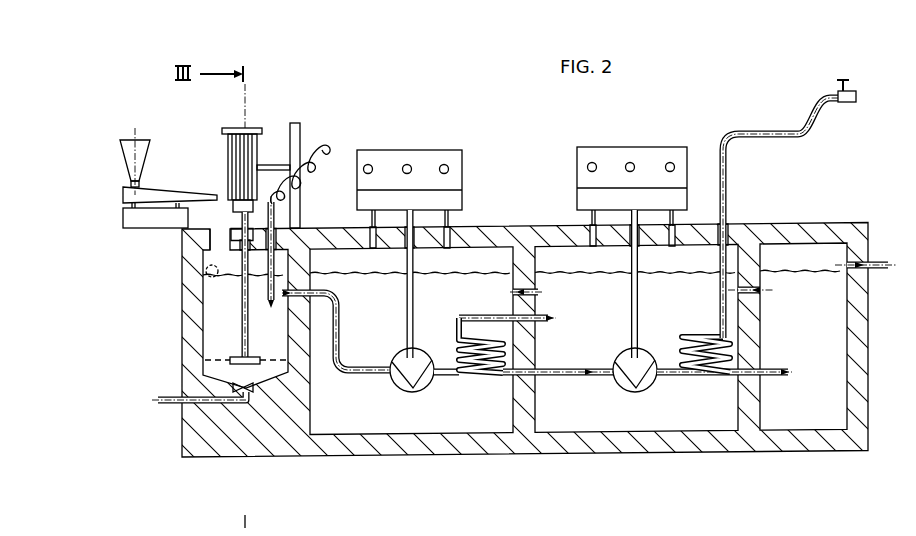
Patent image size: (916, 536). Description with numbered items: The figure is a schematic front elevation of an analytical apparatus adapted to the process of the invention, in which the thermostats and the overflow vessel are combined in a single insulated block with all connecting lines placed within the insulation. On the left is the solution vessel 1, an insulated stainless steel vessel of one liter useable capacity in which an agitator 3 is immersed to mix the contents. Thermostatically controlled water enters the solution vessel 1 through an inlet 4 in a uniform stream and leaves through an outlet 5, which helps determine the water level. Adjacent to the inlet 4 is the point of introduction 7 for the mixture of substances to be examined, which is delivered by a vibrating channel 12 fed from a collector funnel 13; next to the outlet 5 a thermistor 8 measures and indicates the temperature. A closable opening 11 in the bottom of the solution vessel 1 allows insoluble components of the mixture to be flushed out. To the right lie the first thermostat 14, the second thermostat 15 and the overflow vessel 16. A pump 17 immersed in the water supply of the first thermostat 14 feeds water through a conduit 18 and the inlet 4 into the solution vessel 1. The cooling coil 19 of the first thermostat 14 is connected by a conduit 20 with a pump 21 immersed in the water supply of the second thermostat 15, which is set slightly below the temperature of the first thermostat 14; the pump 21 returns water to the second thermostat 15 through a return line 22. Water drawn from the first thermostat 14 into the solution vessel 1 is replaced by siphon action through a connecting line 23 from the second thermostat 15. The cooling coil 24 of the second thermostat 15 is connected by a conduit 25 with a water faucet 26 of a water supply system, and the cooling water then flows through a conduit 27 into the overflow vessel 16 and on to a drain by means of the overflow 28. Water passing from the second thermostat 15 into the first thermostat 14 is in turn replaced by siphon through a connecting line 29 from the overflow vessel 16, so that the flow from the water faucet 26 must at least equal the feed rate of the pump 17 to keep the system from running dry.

The solution vessel 1 is at (215, 325).
The agitator 3 is at (240, 357).
The inlet 4 is at (282, 297).
The outlet 5 is at (205, 272).
The point of introduction 7 is at (216, 226).
The thermistor 8 is at (270, 222).
The closable opening 11 is at (180, 399).
The vibrating channel 12 is at (160, 192).
The collector funnel 13 is at (140, 147).
The first thermostat 14 is at (348, 423).
The second thermostat 15 is at (583, 425).
The overflow vessel 16 is at (803, 421).
The pump 17 is at (424, 383).
The conduit 18 is at (340, 325).
The cooling coil 19 is at (487, 376).
The conduit 20 is at (550, 369).
The pump 21 is at (648, 383).
The return line 22 is at (545, 318).
The connecting line 23 is at (512, 292).
The cooling coil 24 is at (716, 376).
The supply pipe 25 is at (728, 185).
The water faucet 26 is at (845, 104).
The conduit 27 is at (771, 372).
The overflow 28 is at (880, 258).
The connecting line 29 is at (758, 294).